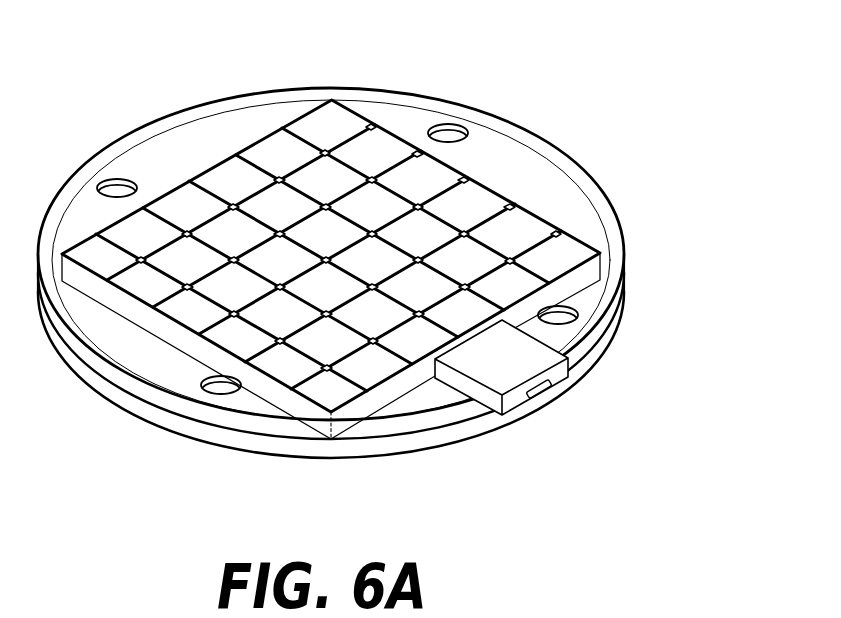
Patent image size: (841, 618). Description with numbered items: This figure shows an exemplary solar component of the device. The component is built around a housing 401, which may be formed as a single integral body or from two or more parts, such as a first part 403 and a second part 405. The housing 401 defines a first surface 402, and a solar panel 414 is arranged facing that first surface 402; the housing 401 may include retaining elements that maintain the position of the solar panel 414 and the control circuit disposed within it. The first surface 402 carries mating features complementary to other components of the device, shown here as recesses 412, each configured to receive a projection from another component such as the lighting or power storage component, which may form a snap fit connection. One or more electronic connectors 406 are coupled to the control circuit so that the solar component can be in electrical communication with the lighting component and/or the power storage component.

The housing 401 is at (380, 89).
The first surface 402 is at (557, 192).
The first part 403 is at (612, 257).
The second part 405 is at (607, 353).
The electronic connector 406 is at (540, 398).
The recess 412 is at (449, 132).
The solar panel 414 is at (250, 143).